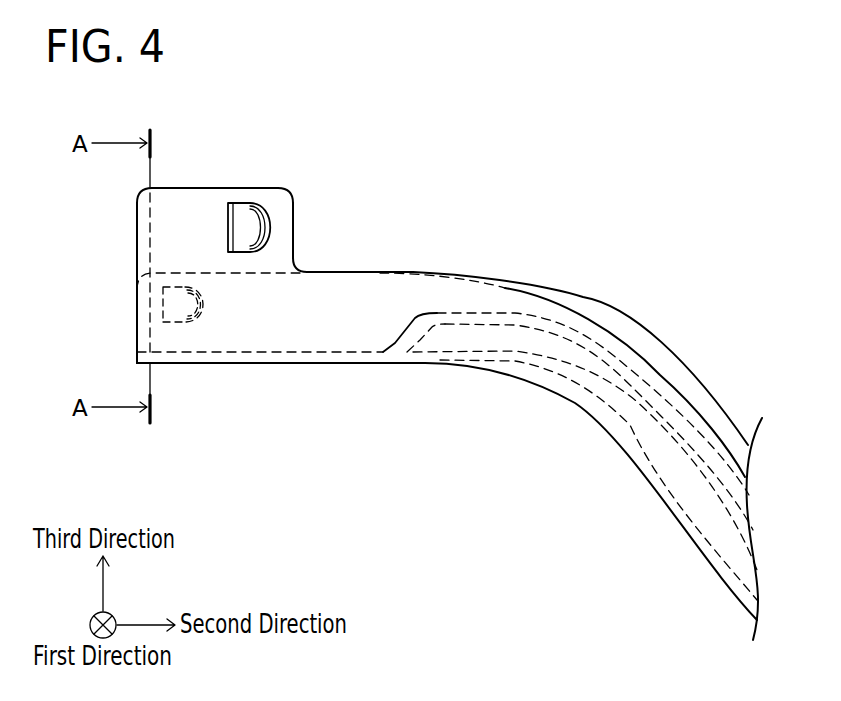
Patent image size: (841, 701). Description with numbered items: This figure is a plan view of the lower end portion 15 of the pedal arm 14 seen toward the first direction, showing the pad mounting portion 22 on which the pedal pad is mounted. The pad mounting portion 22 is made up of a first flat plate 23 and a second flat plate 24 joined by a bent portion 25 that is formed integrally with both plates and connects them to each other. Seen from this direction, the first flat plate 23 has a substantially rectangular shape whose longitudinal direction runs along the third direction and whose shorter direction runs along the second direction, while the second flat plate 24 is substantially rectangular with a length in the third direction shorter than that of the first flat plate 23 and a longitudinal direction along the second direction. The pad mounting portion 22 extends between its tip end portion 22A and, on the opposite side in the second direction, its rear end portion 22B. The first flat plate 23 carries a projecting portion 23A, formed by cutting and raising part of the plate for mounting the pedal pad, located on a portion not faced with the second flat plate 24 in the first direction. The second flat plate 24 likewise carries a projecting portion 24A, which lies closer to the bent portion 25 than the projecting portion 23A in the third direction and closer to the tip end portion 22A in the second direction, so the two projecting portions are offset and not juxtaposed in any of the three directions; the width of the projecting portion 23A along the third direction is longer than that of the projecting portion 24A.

The pedal arm 14 is at (583, 305).
The lower end portion 15 is at (453, 290).
The pad mounting portion 22 is at (322, 167).
The tip end portion 22A is at (137, 231).
The rear end portion 22B is at (295, 231).
The first flat plate 23 is at (193, 210).
The projecting portion 23A is at (243, 217).
The second flat plate 24 is at (292, 349).
The projecting portion 24A is at (201, 304).
The bent portion 25 is at (178, 364).